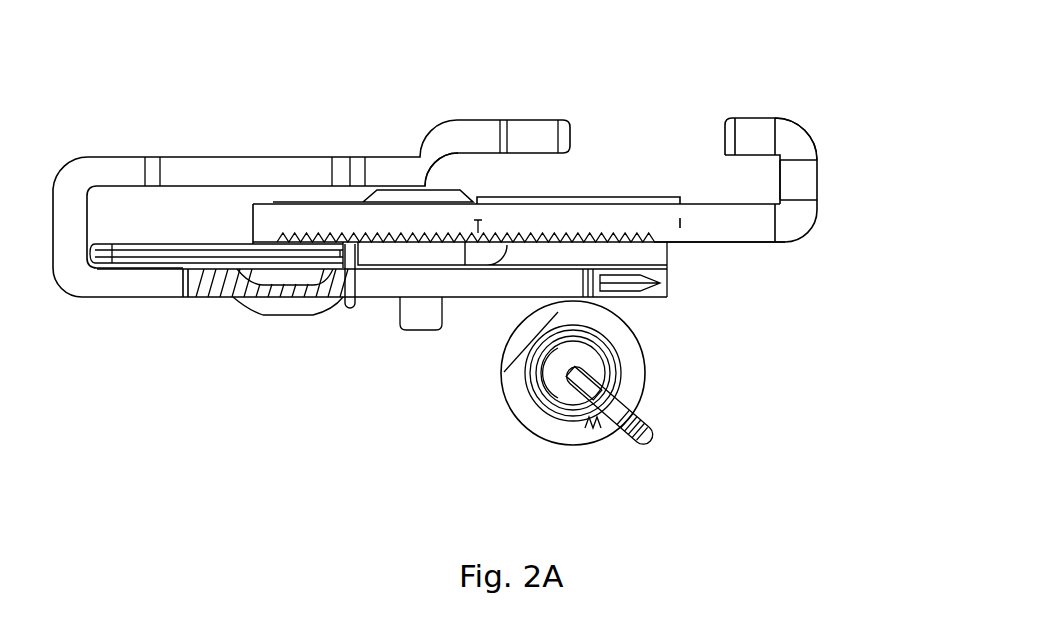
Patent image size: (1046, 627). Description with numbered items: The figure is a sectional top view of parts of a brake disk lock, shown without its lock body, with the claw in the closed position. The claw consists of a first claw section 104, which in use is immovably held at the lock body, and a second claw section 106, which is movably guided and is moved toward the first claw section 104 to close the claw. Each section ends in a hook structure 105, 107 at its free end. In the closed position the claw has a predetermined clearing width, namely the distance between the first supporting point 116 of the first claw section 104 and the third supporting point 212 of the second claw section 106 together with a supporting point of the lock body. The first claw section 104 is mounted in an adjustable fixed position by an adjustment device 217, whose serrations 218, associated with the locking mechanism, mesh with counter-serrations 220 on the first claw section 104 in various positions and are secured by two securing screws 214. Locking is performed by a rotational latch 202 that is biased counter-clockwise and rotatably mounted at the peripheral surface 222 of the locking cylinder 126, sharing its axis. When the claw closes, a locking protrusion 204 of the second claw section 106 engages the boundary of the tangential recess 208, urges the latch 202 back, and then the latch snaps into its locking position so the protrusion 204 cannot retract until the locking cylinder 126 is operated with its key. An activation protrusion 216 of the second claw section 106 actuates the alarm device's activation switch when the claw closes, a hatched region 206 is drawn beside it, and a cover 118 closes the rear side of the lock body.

The first claw section 104 is at (759, 120).
The hook structure 105 is at (802, 117).
The first supporting point 116 is at (792, 182).
The second claw section 106 is at (457, 128).
The hook structure 107 is at (485, 135).
The third supporting point 212 is at (440, 172).
The adjustment device 217 is at (323, 217).
The cover 118 is at (127, 250).
The hatched base plate 206 is at (235, 287).
The activation protrusion 216 is at (292, 315).
The serrations 218 is at (425, 251).
The counter-serrations 220 is at (670, 243).
The securing screws 214 is at (430, 320).
The locking protrusion 204 is at (627, 310).
The peripheral surface 222 is at (517, 422).
The tangential recess 208 is at (527, 334).
The rotational latch 202 is at (620, 345).
The locking cylinder 126 is at (578, 419).